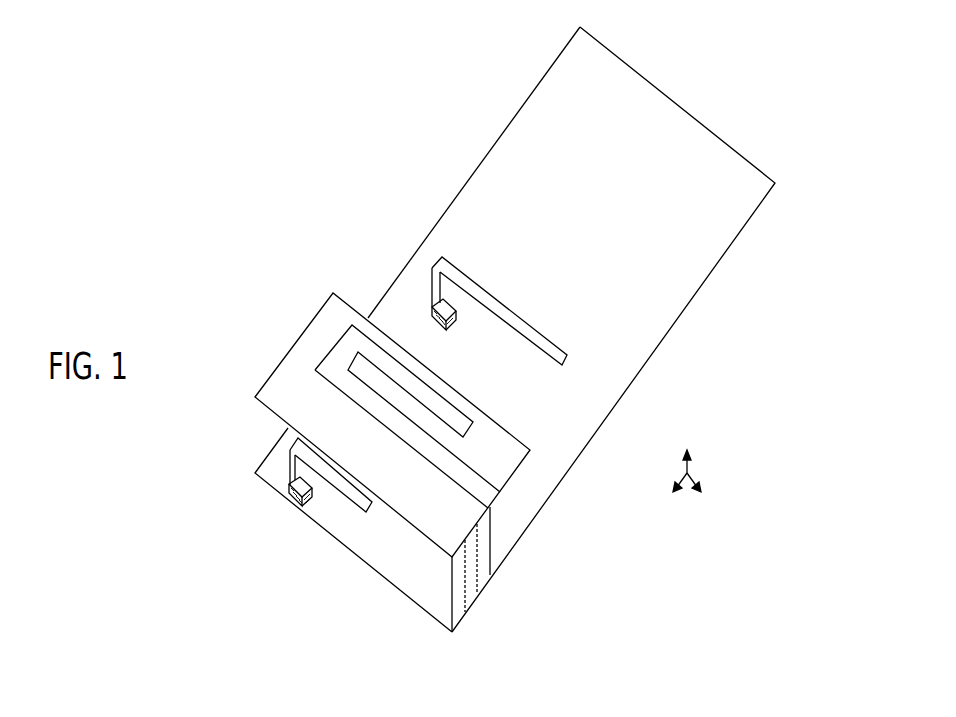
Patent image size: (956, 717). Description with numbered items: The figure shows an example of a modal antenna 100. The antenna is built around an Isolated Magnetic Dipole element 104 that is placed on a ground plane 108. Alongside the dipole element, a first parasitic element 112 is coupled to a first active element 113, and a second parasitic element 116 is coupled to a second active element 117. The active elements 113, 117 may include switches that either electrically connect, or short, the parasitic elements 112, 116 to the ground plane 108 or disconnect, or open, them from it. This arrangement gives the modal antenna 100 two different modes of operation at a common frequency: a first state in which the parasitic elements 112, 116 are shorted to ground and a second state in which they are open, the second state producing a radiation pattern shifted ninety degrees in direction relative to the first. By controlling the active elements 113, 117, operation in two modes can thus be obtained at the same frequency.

The modal antenna 100 is at (280, 34).
The Isolated Magnetic Dipole (IMD) element 104 is at (293, 397).
The ground plane 108 is at (662, 268).
The first parasitic element 112 is at (472, 275).
The first active element 113 is at (428, 302).
The second parasitic element 116 is at (340, 492).
The second active element 117 is at (287, 490).